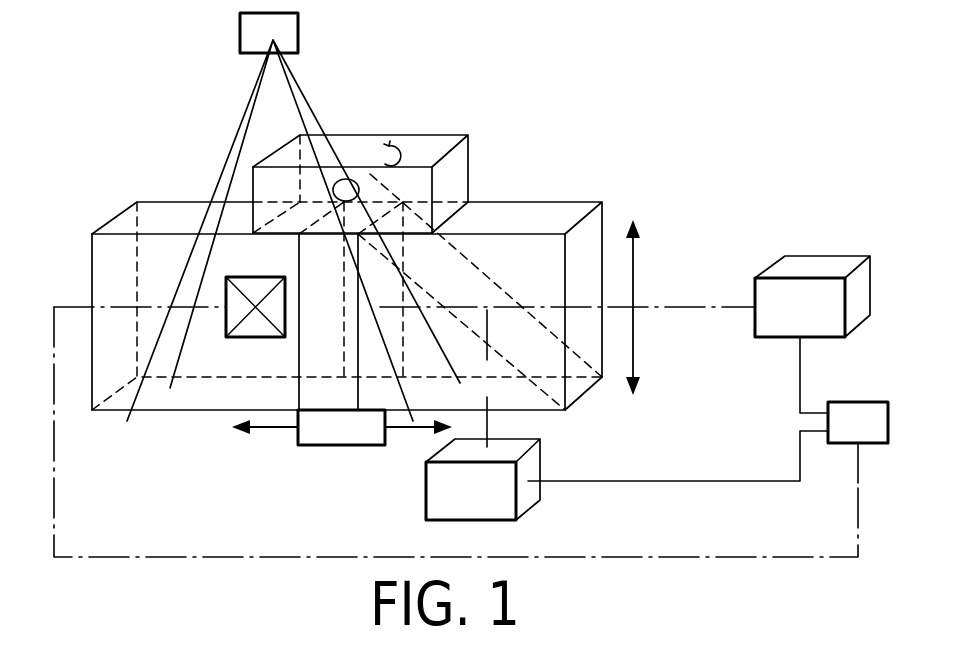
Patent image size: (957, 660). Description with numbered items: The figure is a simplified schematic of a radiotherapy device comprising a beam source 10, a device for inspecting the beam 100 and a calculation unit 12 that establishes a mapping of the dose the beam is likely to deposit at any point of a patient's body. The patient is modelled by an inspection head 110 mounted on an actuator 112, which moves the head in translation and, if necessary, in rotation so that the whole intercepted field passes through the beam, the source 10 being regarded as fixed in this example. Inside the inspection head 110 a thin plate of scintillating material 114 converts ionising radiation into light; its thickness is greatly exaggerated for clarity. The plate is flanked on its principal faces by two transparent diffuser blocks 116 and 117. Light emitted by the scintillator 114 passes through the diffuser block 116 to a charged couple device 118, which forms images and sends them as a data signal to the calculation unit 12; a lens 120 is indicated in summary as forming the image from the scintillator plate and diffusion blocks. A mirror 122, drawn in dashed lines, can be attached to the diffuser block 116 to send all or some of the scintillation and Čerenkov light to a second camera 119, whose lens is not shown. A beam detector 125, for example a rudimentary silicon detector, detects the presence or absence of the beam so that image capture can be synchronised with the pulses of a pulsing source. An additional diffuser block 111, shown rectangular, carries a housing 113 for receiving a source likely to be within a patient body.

The device for inspecting the beam 100 is at (748, 160).
The beam source 10 is at (240, 33).
The calculation unit 12 is at (862, 413).
The inspection head 110 is at (404, 252).
The additional diffuser block 111 is at (347, 143).
The actuator 112 is at (357, 447).
The housing 113 is at (394, 130).
The thin plate of scintillating material 114 is at (313, 382).
The transparent diffuser block 116 is at (563, 210).
The transparent diffuser block 117 is at (121, 224).
The charged couple device 118 is at (808, 267).
The second camera 119 is at (537, 457).
The lens 120 is at (637, 256).
The mirror 122 is at (465, 278).
The beam detector 125 is at (242, 328).